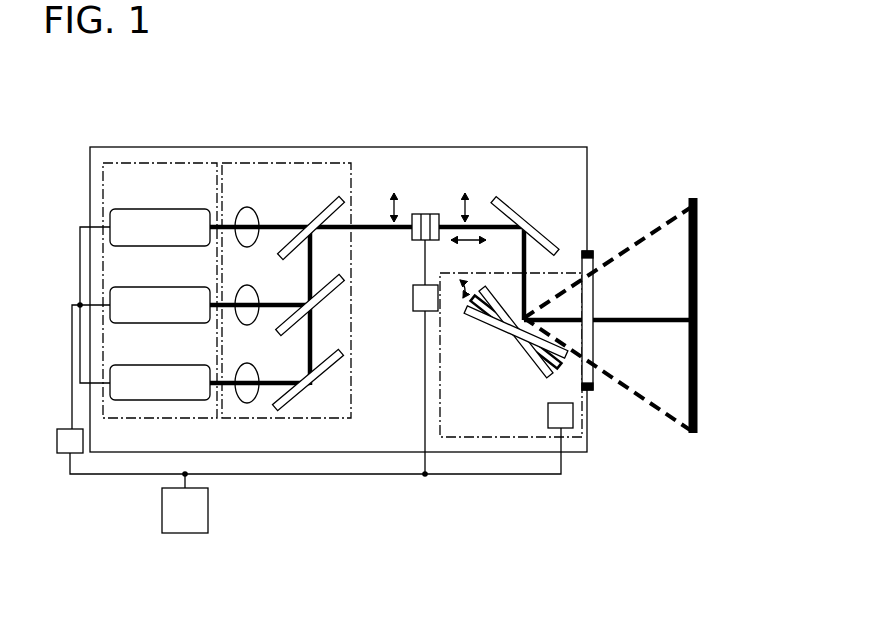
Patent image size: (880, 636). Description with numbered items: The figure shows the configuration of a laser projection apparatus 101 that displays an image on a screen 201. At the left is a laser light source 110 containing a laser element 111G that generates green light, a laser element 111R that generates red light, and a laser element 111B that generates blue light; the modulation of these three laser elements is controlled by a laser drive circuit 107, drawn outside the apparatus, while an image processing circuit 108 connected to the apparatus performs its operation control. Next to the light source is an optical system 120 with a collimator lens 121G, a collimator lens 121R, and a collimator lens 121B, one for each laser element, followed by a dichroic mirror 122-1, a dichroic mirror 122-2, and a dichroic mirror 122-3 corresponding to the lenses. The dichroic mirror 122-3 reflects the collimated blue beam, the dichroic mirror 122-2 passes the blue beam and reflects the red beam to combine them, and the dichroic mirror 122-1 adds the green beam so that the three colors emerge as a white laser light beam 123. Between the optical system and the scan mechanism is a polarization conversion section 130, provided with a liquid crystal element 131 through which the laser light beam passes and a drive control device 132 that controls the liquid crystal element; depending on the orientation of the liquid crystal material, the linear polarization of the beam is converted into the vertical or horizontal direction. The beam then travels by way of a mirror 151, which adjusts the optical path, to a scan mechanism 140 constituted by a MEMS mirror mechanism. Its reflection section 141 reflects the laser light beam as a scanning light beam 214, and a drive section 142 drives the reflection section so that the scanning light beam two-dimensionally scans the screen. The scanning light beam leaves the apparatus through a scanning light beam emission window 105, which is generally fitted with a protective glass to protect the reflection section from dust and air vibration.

The laser projection apparatus 101 is at (540, 143).
The scanning light beam emission window 105 is at (594, 298).
The laser drive circuit 107 is at (62, 455).
The image processing circuit 108 is at (162, 512).
The laser light source 110 is at (125, 158).
The laser element 111G is at (152, 208).
The laser element 111R is at (156, 286).
The laser element 111B is at (159, 364).
The optical system 120 is at (291, 158).
The collimator lens 121G is at (249, 207).
The collimator lens 121R is at (249, 285).
The collimator lens 121B is at (249, 363).
The dichroic mirror 122-1 is at (308, 214).
The dichroic mirror 122-2 is at (325, 300).
The dichroic mirror 122-3 is at (325, 378).
The laser light beam 123 is at (363, 224).
The polarization conversion section 130 is at (423, 211).
The liquid crystal element 131 is at (426, 213).
The drive control device 132 is at (413, 291).
The scan mechanism 140 is at (539, 391).
The reflection section 141 is at (471, 318).
The drive section 142 is at (574, 420).
The mirror 151 is at (511, 199).
The screen 201 is at (700, 222).
The scanning light beam 214 is at (617, 252).